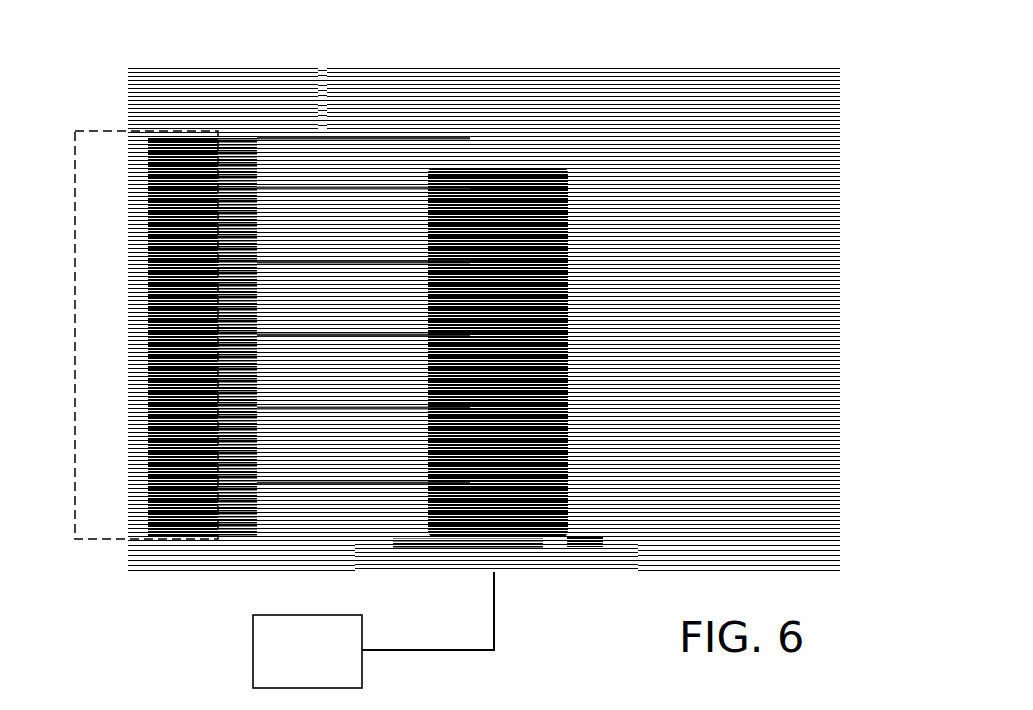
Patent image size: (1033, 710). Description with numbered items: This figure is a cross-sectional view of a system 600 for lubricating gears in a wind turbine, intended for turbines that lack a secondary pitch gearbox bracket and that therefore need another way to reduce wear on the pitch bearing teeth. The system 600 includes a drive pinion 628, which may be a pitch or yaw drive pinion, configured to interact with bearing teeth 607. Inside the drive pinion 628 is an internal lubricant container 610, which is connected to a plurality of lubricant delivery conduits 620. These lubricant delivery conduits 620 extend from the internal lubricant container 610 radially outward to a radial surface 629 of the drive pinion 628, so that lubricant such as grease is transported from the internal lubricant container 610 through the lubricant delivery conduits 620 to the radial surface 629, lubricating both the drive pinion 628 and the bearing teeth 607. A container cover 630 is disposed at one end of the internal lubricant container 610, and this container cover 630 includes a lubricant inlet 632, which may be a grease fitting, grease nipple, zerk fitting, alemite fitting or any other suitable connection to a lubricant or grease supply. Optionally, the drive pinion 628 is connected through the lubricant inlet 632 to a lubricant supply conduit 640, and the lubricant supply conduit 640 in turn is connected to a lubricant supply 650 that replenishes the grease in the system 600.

The system for lubricating gears 600 is at (712, 36).
The bearing teeth 607 is at (102, 539).
The internal lubricant container 610 is at (512, 313).
The lubricant delivery conduits 620 is at (350, 258).
The drive pinion 628 is at (718, 350).
The radial surface 629 is at (250, 222).
The container cover 630 is at (583, 540).
The lubricant inlet 632 is at (505, 553).
The lubricant supply conduit 640 is at (492, 634).
The lubricant supply 650 is at (327, 661).